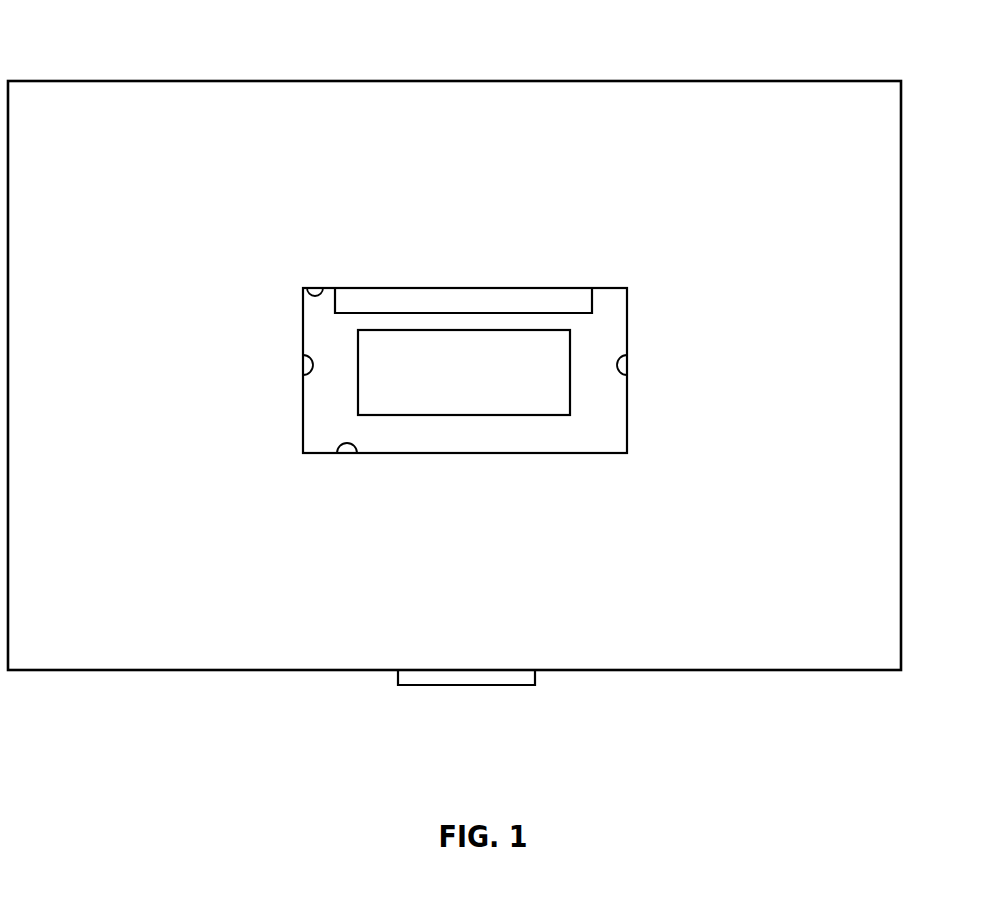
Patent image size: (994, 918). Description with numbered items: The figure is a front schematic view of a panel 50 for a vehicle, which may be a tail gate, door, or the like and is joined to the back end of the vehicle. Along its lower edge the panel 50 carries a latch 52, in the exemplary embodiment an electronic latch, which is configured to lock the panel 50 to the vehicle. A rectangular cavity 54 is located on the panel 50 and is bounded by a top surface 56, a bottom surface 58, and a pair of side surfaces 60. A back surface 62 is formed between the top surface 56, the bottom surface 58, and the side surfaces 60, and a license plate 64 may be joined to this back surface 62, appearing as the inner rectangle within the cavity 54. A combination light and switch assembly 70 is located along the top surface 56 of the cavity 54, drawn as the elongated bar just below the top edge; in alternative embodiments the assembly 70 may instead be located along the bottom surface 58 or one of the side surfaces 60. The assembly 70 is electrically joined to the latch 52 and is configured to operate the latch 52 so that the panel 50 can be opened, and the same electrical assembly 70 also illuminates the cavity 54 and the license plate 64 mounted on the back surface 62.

The panel 50 is at (873, 198).
The latch 52 is at (495, 688).
The cavity 54 is at (593, 412).
The top surface 56 is at (310, 288).
The bottom surface 58 is at (333, 455).
The side surfaces 60 is at (303, 355).
The back surface 62 is at (476, 433).
The license plate 64 is at (464, 372).
The combination light and switch assembly 70 is at (522, 298).